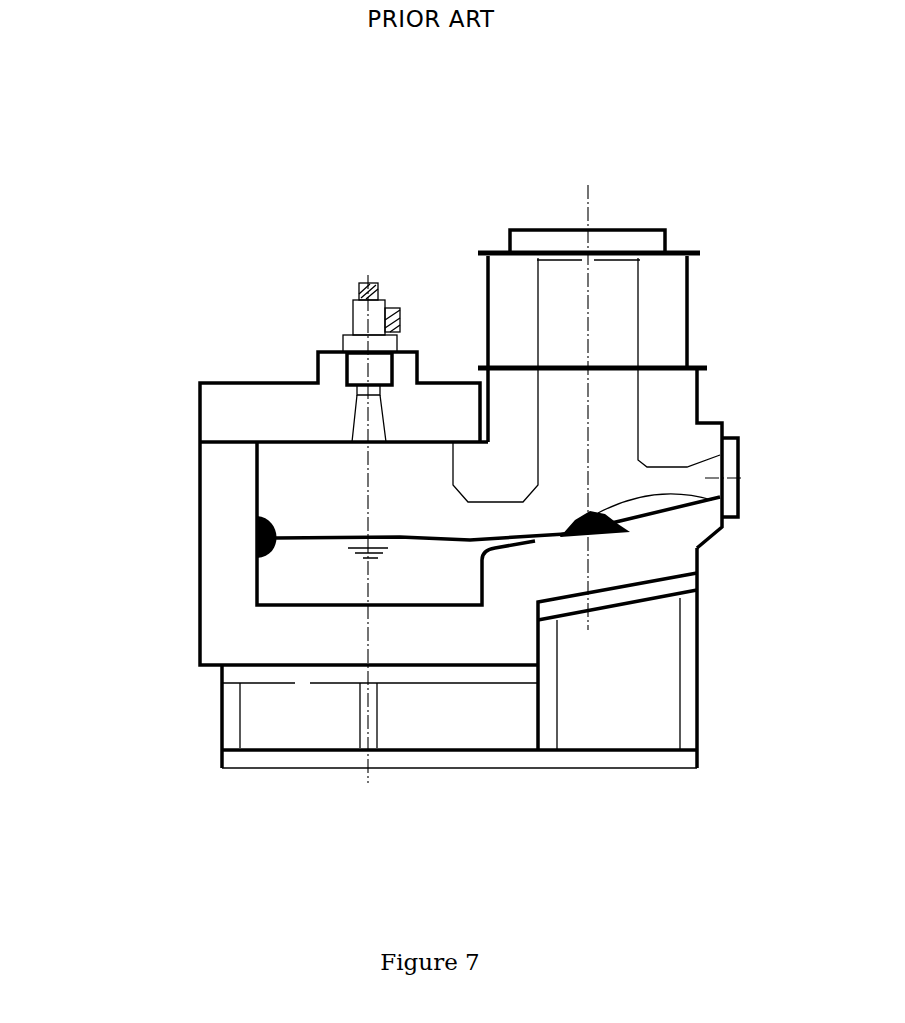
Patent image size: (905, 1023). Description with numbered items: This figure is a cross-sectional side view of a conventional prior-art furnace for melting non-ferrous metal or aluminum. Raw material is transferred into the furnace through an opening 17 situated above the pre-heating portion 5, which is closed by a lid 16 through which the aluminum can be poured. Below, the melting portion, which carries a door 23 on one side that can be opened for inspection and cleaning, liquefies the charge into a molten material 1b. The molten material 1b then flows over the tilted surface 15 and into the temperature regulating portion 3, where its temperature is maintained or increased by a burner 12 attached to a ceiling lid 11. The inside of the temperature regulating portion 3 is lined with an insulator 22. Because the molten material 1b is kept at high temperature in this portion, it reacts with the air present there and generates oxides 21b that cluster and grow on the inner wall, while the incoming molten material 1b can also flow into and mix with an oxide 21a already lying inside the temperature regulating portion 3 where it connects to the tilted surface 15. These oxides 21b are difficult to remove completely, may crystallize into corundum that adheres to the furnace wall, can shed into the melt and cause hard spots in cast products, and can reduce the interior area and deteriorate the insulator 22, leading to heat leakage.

The temperature regulating portion 3 is at (345, 495).
The pre-heating portion 5 is at (588, 422).
The ceiling lid 11 is at (243, 410).
The burner 12 is at (347, 307).
The tilted surface 15 is at (623, 562).
The lid 16 is at (643, 247).
The opening 17 is at (587, 303).
The insulator 22 is at (230, 487).
The door 23 is at (725, 468).
The molten material 1b is at (312, 567).
The oxide 21a is at (697, 503).
The oxides 21b is at (253, 552).